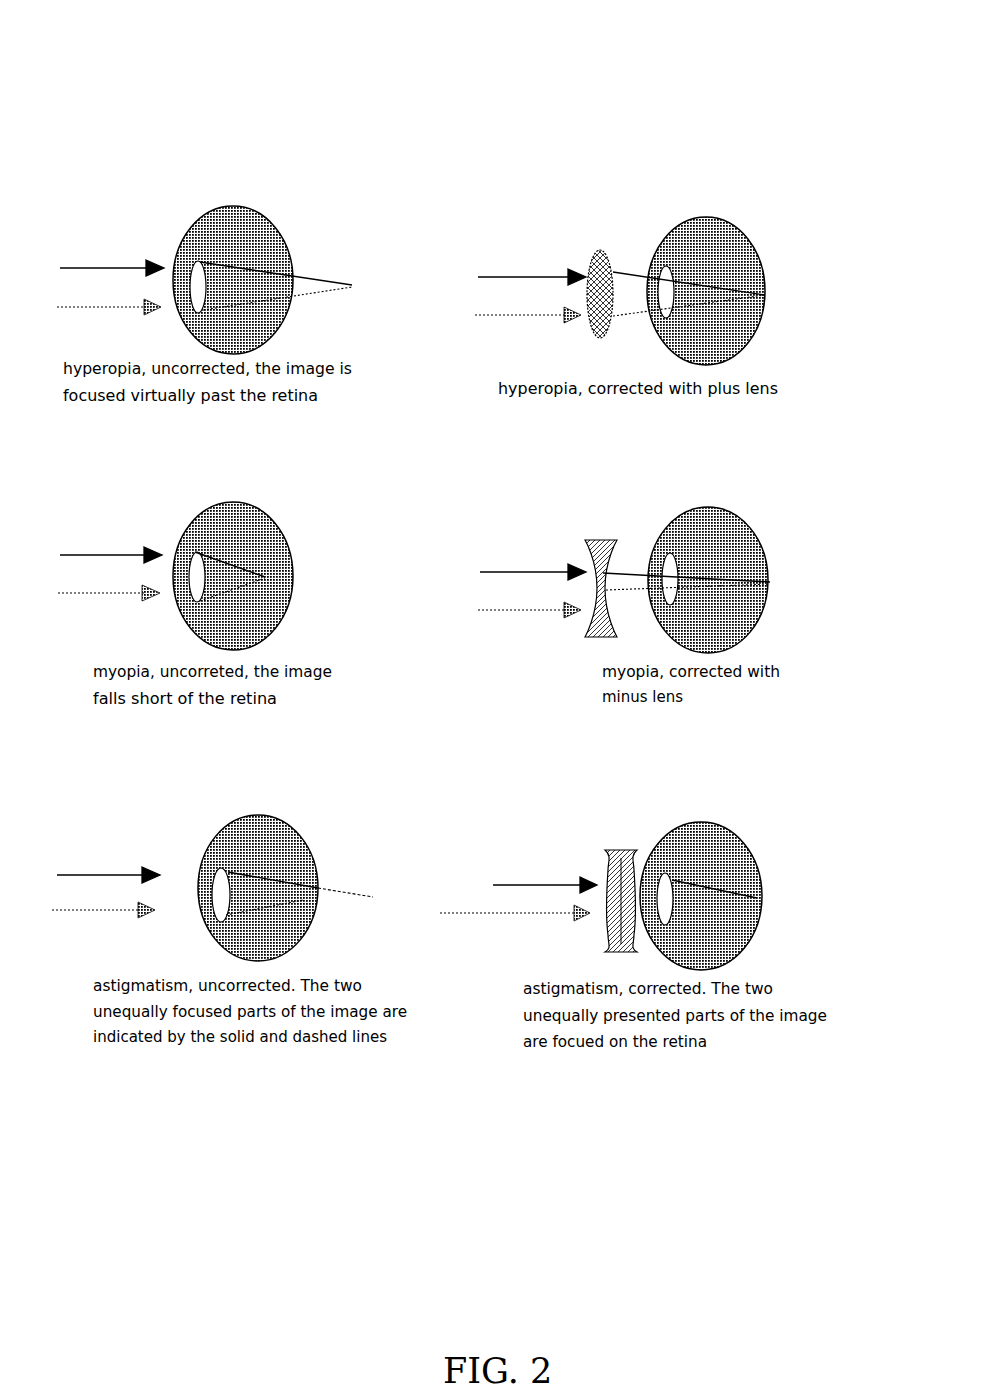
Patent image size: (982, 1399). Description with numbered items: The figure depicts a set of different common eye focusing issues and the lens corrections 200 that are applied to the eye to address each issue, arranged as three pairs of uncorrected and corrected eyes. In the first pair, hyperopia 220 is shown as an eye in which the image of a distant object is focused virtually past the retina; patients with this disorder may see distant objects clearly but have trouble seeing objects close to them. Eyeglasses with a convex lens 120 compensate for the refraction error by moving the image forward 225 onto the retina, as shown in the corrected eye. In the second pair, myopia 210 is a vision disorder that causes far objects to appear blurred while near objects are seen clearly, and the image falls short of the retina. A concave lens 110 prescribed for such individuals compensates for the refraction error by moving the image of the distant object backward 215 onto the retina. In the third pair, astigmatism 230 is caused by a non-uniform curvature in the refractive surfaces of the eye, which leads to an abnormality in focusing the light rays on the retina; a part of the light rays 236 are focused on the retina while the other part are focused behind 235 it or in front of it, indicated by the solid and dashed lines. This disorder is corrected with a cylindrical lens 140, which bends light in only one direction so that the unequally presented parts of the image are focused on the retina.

The set of eye focusing issues and lens corrections 200 is at (422, 90).
The hyperopia 220 is at (288, 225).
The forward image shift 225 is at (355, 289).
The convex lens 120 is at (600, 252).
The myopia 210 is at (267, 512).
The backward image shift 215 is at (275, 582).
The concave lens 110 is at (603, 530).
The astigmatism 230 is at (290, 820).
The light rays focused behind the retina 235 is at (387, 896).
The light rays focused on the retina 236 is at (303, 900).
The cylindrical lens 140 is at (628, 847).